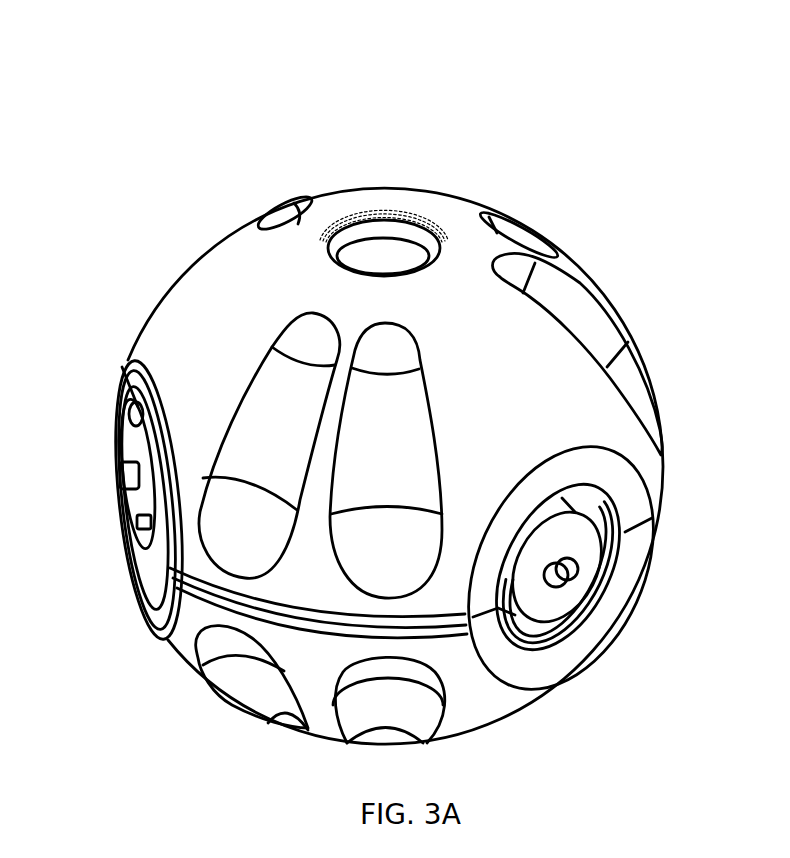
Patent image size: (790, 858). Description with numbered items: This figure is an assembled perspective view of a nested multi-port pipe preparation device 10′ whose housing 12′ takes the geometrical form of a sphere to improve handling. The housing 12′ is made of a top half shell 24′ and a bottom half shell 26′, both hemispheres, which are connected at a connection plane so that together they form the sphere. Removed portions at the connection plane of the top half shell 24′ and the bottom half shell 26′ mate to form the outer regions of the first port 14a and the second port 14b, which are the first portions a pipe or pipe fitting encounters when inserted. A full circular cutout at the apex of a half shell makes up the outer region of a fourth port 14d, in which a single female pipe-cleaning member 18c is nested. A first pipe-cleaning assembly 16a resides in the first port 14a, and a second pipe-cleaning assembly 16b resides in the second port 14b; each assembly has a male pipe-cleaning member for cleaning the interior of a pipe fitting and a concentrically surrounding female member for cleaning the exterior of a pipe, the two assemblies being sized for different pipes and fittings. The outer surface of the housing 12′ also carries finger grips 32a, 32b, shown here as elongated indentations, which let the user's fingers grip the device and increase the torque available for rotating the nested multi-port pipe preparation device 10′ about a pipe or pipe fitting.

The nested multi-port pipe preparation device 10′ is at (630, 111).
The housing 12′ is at (151, 259).
The top half shell 24′ is at (420, 190).
The fourth port 14d is at (332, 247).
The single female pipe-cleaning member 18c is at (400, 265).
The second port 14b is at (122, 367).
The second pipe-cleaning assembly 16b is at (142, 518).
The finger grip 32a is at (257, 405).
The finger grip 32b is at (410, 437).
The first port 14a is at (608, 585).
The first pipe-cleaning assembly 16a is at (553, 612).
The bottom half shell 26′ is at (190, 667).